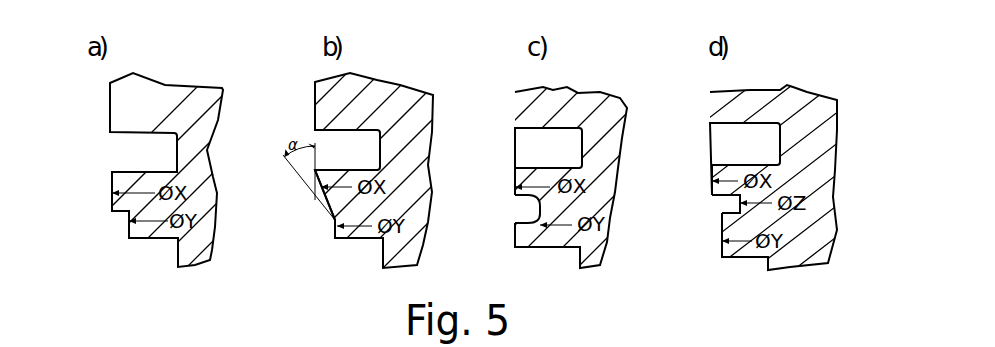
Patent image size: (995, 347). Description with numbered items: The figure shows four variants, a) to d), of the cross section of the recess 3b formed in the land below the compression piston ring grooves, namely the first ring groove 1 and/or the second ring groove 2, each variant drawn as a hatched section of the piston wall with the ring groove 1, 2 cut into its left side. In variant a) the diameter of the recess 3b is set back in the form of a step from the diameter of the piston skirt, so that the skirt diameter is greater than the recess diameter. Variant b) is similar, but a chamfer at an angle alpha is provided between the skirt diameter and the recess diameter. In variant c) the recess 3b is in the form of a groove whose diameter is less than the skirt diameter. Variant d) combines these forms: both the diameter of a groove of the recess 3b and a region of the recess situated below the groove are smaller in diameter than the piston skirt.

The first ring groove 1 is at (150, 158).
The second ring groove 2 is at (427, 181).
The recess 3b is at (129, 226).